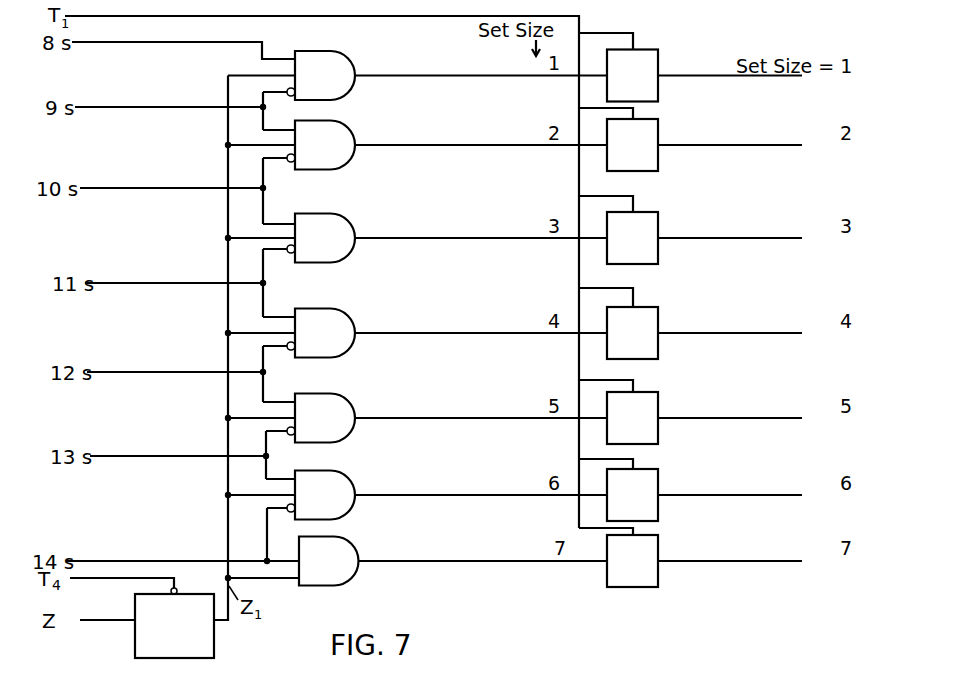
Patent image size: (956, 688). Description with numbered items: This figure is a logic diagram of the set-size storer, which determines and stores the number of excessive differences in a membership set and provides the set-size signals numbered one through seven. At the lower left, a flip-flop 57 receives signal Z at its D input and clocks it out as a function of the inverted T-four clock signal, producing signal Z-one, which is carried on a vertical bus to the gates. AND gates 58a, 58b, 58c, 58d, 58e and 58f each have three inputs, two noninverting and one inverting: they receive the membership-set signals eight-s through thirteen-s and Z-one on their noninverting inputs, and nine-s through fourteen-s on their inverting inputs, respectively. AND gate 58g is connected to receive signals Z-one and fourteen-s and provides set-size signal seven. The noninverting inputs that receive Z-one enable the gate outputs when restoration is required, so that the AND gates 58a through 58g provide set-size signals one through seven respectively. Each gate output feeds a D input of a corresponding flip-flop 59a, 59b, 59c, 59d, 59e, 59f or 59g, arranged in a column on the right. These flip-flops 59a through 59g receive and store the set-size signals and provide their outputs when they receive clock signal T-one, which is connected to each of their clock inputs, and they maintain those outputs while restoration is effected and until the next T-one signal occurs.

The flip-flop 57 is at (184, 594).
The AND gate 58a is at (338, 63).
The AND gate 58b is at (338, 132).
The AND gate 58c is at (338, 225).
The AND gate 58d is at (338, 320).
The AND gate 58e is at (338, 405).
The AND gate 58f is at (338, 482).
The AND gate 58g is at (340, 548).
The flip-flop 59a is at (643, 64).
The flip-flop 59b is at (645, 132).
The flip-flop 59c is at (653, 232).
The flip-flop 59d is at (653, 329).
The flip-flop 59e is at (653, 409).
The flip-flop 59f is at (651, 481).
The flip-flop 59g is at (651, 548).